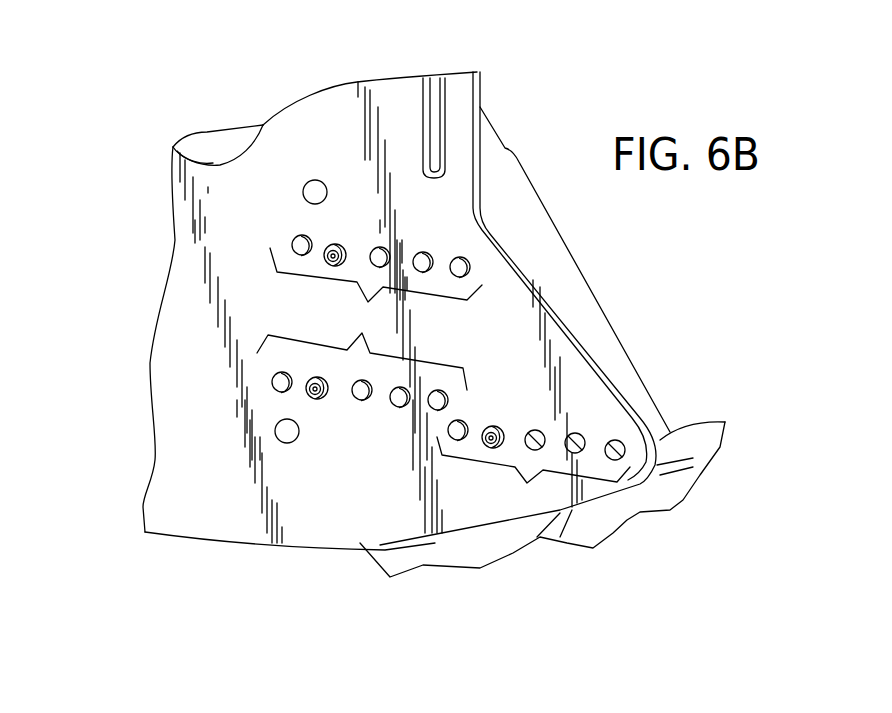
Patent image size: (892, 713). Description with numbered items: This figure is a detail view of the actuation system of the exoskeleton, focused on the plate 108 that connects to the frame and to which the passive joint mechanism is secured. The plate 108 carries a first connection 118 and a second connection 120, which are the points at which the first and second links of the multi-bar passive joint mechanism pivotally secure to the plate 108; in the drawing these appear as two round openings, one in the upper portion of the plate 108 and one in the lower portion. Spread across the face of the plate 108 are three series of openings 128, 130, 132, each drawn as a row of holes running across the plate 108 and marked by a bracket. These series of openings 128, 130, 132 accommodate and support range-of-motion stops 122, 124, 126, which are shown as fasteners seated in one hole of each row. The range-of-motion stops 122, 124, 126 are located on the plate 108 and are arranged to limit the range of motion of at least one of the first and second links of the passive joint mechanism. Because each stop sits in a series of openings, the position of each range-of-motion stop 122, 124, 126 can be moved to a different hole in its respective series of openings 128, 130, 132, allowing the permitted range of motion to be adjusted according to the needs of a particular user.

The plate 108 is at (208, 193).
The first connection 118 is at (313, 180).
The second connection 120 is at (283, 441).
The range-of-motion stop 122 is at (338, 246).
The range-of-motion stop 124 is at (318, 399).
The range-of-motion stop 126 is at (497, 427).
The series of openings 128 is at (280, 273).
The series of openings 130 is at (270, 333).
The series of openings 132 is at (540, 477).